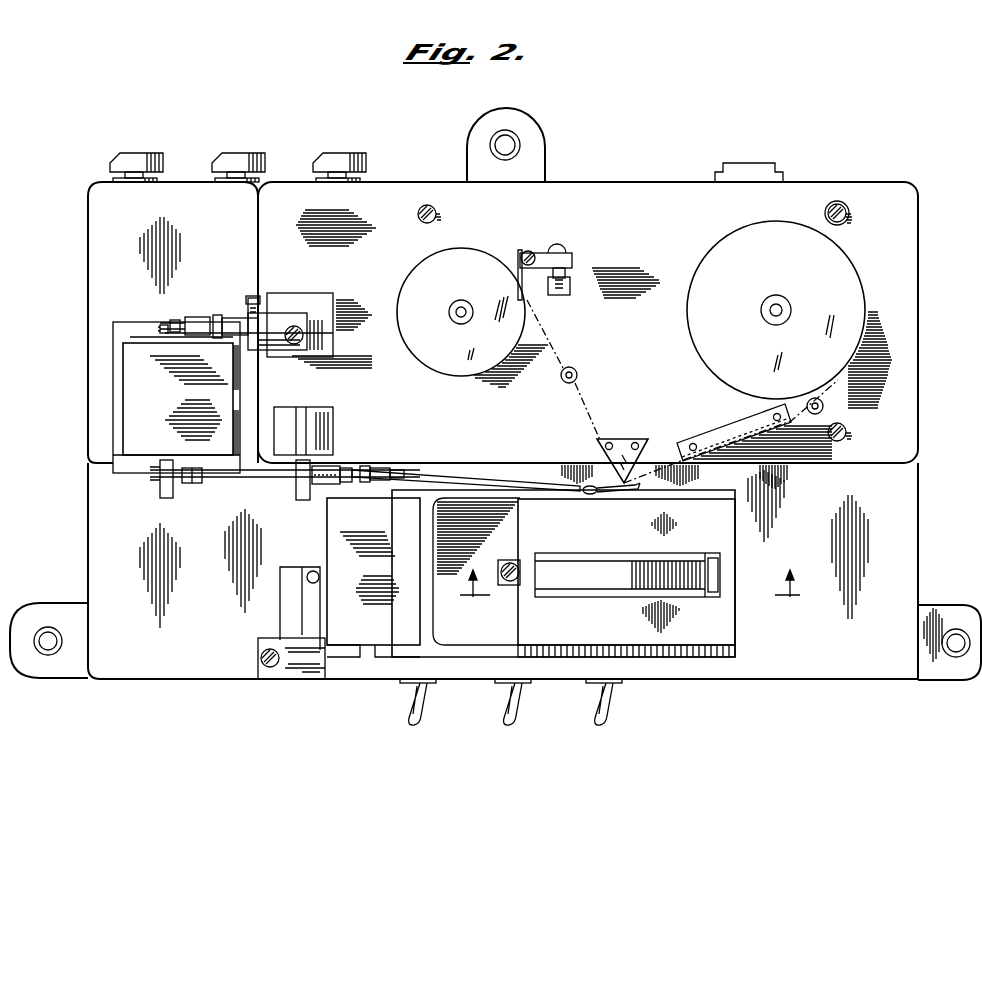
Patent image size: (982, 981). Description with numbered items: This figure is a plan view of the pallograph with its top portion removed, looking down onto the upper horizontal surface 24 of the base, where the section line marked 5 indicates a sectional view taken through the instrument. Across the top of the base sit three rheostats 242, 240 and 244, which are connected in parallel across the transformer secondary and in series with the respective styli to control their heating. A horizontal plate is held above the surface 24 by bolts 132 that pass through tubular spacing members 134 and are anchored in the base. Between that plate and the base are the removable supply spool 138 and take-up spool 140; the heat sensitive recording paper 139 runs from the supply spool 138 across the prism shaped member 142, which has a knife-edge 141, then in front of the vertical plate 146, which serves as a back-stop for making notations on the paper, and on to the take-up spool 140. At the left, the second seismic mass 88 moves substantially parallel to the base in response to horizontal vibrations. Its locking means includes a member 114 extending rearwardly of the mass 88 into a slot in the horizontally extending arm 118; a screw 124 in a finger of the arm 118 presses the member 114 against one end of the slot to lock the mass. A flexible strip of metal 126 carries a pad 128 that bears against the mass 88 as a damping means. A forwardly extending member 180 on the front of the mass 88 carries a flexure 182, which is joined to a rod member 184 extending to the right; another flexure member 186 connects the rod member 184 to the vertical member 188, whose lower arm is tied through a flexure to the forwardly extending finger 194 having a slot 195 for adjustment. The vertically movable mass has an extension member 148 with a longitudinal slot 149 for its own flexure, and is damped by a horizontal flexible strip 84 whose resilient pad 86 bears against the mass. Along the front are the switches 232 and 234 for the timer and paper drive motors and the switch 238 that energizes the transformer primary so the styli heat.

The upper horizontal surface 24 is at (648, 190).
The rheostat 242 is at (137, 157).
The rheostat 240 is at (237, 157).
The rheostat 244 is at (341, 157).
The tubular spacing member 134 is at (843, 208).
The bolt 132 is at (850, 216).
The take-up spool 140 is at (832, 263).
The supply spool 138 is at (415, 284).
The heat sensitive recording paper 139 is at (565, 364).
The prism shaped member 142 is at (623, 438).
The vertical plate 146 is at (714, 441).
The knife-edge 141 is at (615, 470).
The second seismic mass 88 is at (135, 396).
The screw 124 is at (210, 320).
The member 114 is at (214, 318).
The horizontally extending arm 118 is at (243, 320).
The flexible strip of metal 126 is at (236, 312).
The pad 128 is at (192, 337).
The rod member 184 is at (250, 475).
The flexure member 186 is at (302, 445).
The vertical member 188 is at (346, 466).
The longitudinal slot 149 is at (356, 468).
The slot 195 is at (290, 484).
The forwardly extending member 180 is at (162, 490).
The flexure 182 is at (195, 486).
The extension member 148 is at (320, 490).
The forwardly extending finger 194 is at (283, 491).
The pad 86 is at (380, 658).
The horizontal flexible strip 84 is at (346, 660).
The switch 232 is at (412, 706).
The switch 234 is at (503, 706).
The switch 238 is at (598, 706).
The section line 5- 5 is at (630, 593).